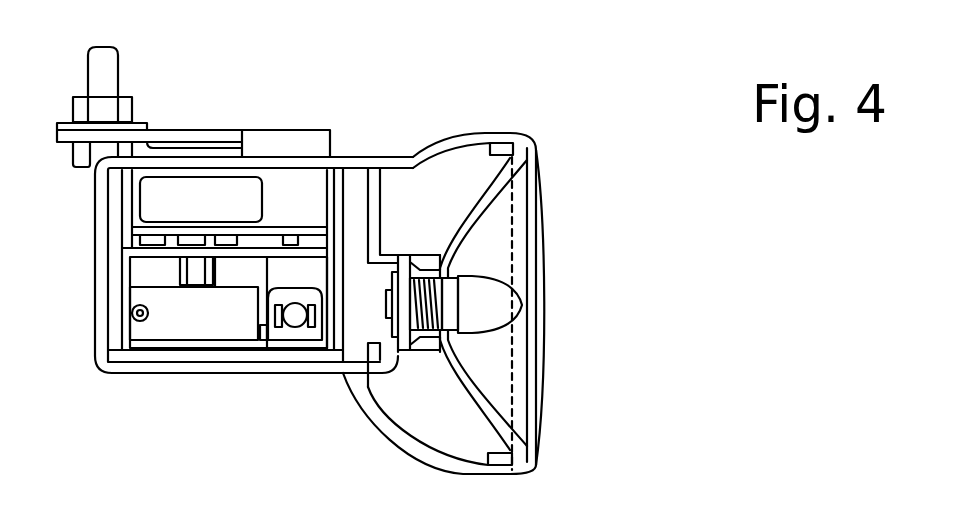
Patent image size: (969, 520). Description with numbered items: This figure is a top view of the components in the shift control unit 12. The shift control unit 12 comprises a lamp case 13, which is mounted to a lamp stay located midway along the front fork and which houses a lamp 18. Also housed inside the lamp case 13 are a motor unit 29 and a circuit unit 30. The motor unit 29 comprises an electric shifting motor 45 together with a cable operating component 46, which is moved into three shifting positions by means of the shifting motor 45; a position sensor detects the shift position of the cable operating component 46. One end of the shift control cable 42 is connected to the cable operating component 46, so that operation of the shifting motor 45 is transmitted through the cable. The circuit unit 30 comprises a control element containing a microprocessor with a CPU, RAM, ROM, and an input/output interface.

The shift control unit 12 is at (355, 113).
The lamp case 13 is at (368, 148).
The lamp 18 is at (478, 293).
The motor unit 29 is at (220, 355).
The circuit unit 30 is at (213, 197).
The shift control cable 42 is at (107, 78).
The electric shifting motor 45 is at (277, 328).
The cable operating component 46 is at (182, 325).